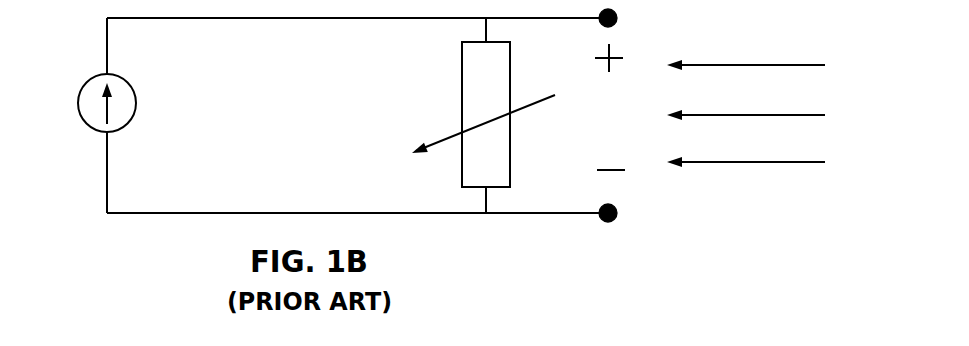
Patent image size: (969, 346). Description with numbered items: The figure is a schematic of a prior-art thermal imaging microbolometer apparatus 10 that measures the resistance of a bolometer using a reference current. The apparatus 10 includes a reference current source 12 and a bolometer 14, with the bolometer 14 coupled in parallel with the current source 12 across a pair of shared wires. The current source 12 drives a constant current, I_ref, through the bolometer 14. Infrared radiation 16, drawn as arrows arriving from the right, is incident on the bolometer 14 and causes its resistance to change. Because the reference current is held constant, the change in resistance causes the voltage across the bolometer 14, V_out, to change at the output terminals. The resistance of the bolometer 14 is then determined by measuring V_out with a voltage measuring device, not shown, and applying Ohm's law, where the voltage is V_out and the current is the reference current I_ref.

The thermal imaging microbolometer apparatus 10 is at (339, 158).
The reference current source 12 is at (97, 130).
The bolometer 14 is at (512, 72).
The infrared radiation 16 is at (748, 163).